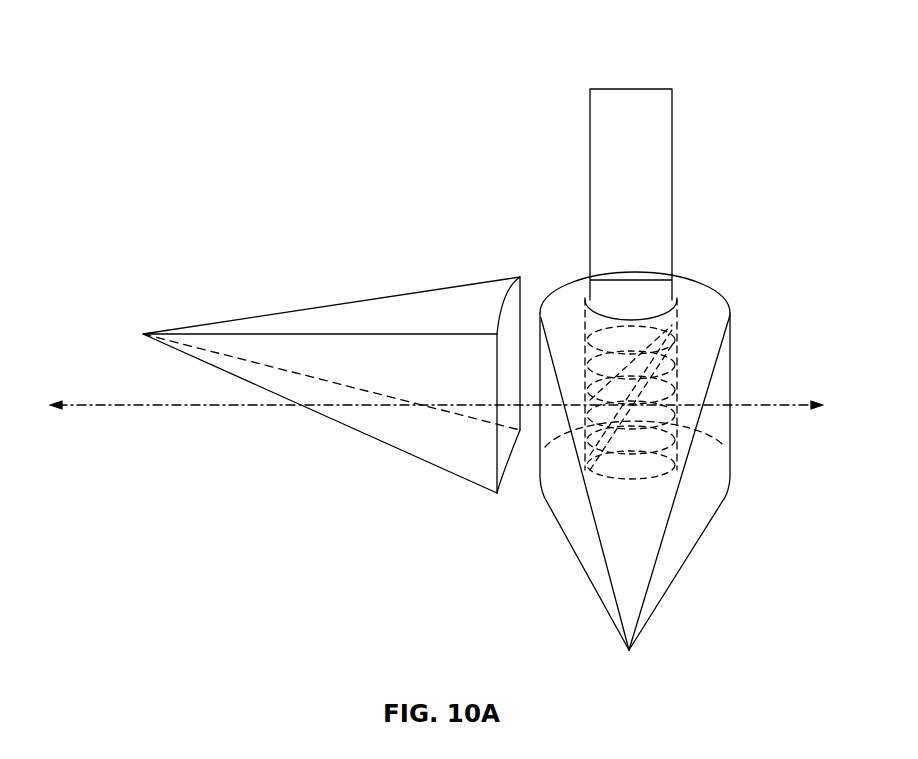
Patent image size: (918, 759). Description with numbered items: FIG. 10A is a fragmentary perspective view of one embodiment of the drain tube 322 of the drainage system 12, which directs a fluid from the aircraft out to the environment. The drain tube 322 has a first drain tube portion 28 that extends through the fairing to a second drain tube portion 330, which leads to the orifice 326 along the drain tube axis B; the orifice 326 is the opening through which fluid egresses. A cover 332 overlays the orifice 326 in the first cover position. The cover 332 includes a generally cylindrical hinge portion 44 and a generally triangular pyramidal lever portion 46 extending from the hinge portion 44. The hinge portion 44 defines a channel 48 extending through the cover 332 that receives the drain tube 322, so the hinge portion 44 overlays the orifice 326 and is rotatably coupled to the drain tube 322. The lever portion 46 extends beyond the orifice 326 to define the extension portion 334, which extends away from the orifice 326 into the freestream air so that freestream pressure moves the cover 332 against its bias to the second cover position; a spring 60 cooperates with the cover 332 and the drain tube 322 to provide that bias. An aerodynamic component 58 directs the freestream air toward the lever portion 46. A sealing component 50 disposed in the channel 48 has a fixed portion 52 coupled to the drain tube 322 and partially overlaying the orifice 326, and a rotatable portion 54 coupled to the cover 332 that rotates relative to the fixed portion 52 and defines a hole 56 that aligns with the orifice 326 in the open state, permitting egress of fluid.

The drainage system 12 is at (115, 42).
The first drain tube portion 28 is at (590, 173).
The drain tube 322 is at (628, 402).
The second drain tube portion 330 is at (597, 288).
The orifice 326 is at (587, 328).
The rotatable portion 54 is at (630, 443).
The hole 56 is at (660, 452).
The hinge portion 44 is at (720, 438).
The spring 60 is at (723, 452).
The sealing component 50 is at (685, 471).
The cover 332 is at (713, 517).
The extension portion 334 is at (673, 542).
The lever portion 46 is at (650, 612).
The channel 48 is at (606, 440).
The fixed portion 52 is at (606, 458).
The aerodynamic component 58 is at (240, 368).
The drain tube axis B is at (790, 404).